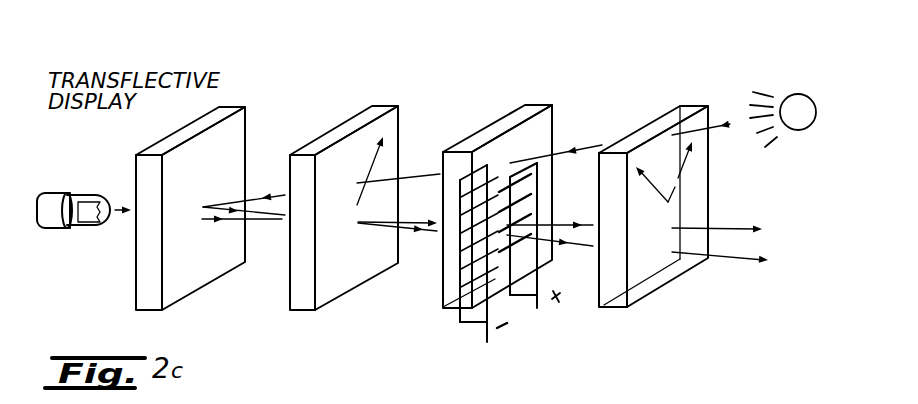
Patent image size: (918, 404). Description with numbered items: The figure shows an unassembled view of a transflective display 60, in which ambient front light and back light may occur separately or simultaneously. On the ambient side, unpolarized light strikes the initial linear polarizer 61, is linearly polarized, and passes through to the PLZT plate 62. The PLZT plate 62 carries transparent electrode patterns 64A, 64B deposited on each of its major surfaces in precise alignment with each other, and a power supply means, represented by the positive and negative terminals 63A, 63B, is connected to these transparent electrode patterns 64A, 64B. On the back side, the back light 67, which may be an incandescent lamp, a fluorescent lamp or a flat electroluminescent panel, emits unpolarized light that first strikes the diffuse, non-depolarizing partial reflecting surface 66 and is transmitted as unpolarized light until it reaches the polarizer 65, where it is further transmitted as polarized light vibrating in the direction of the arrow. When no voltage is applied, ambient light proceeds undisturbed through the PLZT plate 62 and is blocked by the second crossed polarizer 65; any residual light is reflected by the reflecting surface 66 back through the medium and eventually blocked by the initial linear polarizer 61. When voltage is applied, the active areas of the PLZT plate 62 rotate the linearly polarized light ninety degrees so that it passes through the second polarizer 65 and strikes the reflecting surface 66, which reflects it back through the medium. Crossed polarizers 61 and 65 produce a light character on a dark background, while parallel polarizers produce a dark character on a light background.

The transflective display 60 is at (677, 65).
The initial linear polarizer 61 is at (698, 205).
The PLZT plate 62 is at (545, 138).
The positive terminal 63A is at (537, 305).
The negative terminal 63B is at (486, 326).
The transparent electrode pattern 64A is at (527, 189).
The transparent electrode pattern 64B is at (460, 181).
The second crossed polarizer 65 is at (395, 124).
The diffuse, non-depolarizing partial reflecting surface 66 is at (238, 143).
The back light 67 is at (48, 192).